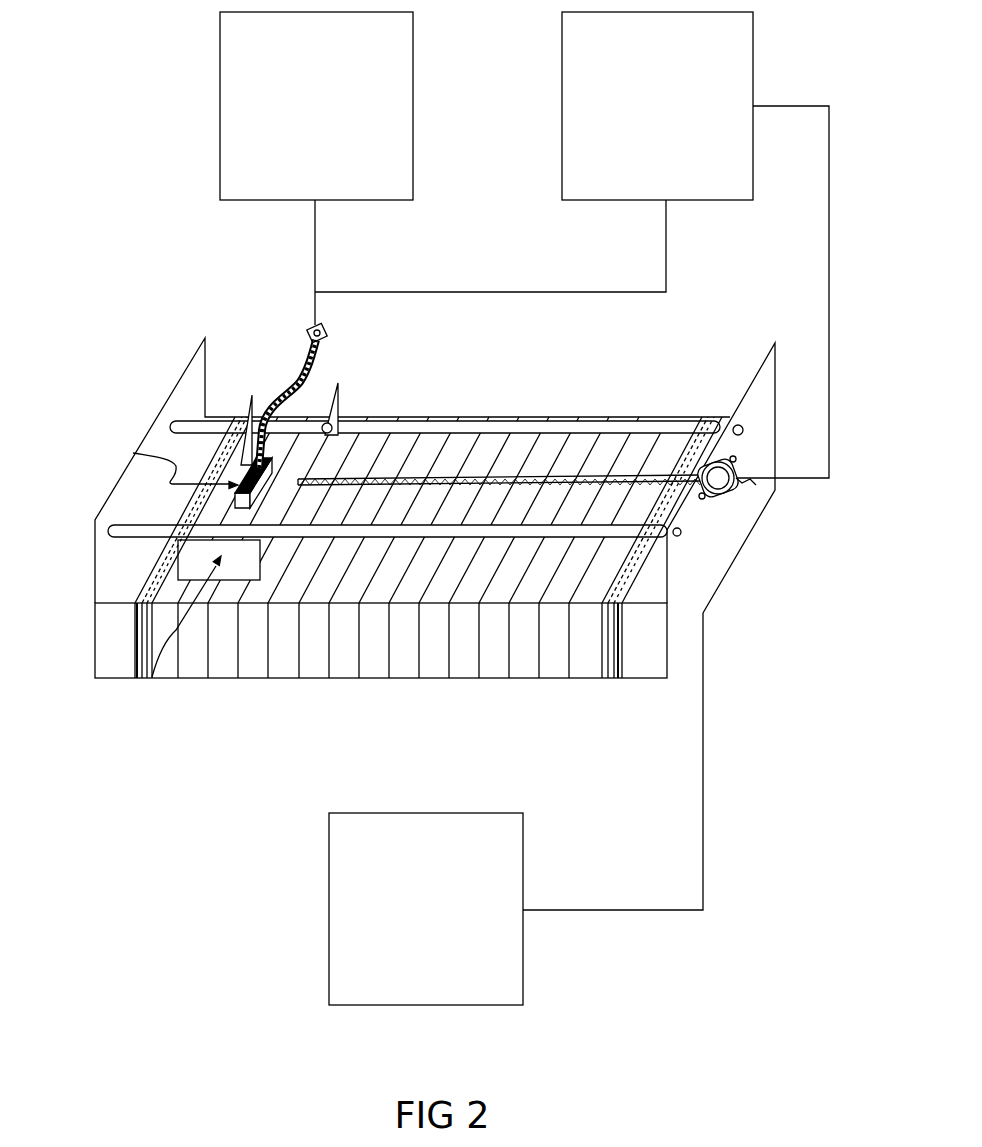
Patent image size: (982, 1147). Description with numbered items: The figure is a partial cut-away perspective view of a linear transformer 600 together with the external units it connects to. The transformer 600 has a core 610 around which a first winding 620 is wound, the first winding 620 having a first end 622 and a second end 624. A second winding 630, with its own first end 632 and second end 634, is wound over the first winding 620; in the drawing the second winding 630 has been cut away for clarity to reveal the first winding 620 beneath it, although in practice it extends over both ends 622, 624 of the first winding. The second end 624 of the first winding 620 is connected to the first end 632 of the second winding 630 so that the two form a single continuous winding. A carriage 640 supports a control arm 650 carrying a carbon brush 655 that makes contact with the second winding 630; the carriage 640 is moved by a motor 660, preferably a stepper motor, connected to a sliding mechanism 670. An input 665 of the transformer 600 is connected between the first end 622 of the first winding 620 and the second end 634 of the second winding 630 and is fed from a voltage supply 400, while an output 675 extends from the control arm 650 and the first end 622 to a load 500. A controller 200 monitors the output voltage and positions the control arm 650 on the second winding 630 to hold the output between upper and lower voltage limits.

The linear transformer 600 is at (141, 320).
The core 610 is at (650, 673).
The first winding 620 is at (143, 632).
The first end of the first winding 622 is at (128, 681).
The second end of the first winding 624 is at (622, 678).
The second winding 630 is at (342, 665).
The first end of the second winding 632 is at (583, 662).
The second end of the second winding 634 is at (168, 665).
The carriage 640 is at (238, 572).
The control arm 650 is at (280, 427).
The carbon brush 655 is at (331, 408).
The motor 660 is at (716, 489).
The input 665 is at (705, 615).
The sliding mechanism 670 is at (490, 474).
The output 675 is at (306, 322).
The load 500 is at (296, 157).
The controller 200 is at (637, 157).
The voltage supply 400 is at (406, 962).